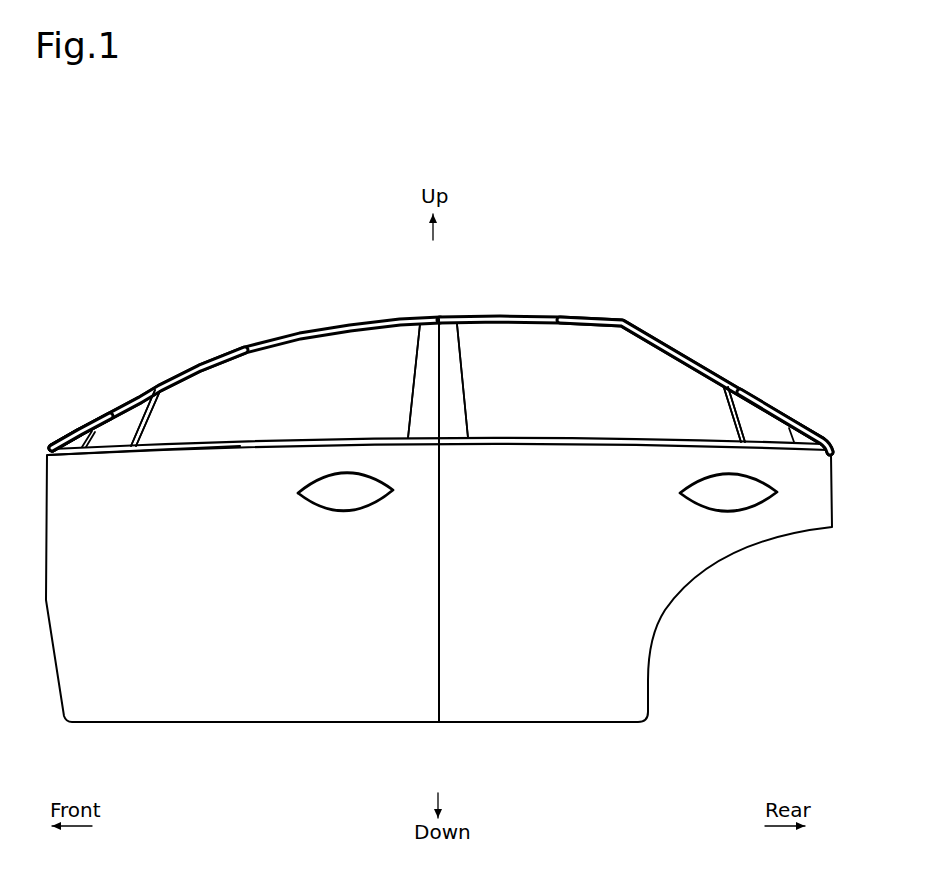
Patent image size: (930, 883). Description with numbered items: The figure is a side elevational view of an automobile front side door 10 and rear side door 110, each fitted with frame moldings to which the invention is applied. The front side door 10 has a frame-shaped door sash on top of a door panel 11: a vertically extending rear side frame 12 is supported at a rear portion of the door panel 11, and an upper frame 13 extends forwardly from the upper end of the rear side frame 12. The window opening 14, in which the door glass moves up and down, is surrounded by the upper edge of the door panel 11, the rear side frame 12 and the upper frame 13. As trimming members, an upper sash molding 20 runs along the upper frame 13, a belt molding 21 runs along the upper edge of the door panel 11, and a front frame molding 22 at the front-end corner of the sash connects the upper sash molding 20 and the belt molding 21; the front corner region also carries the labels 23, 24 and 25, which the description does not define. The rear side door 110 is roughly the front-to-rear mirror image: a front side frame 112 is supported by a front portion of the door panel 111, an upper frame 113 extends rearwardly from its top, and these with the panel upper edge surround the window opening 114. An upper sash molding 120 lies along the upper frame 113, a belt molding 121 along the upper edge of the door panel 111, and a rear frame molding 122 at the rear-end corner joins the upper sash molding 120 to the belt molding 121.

The front side door 10 is at (426, 508).
The door panel 11 is at (207, 705).
The rear side frame 12 is at (406, 382).
The upper frame 13 is at (336, 316).
The window opening 14 is at (300, 368).
The upper sash molding 20 is at (244, 340).
The belt molding 21 is at (240, 438).
The front frame molding 22 is at (99, 404).
The front door partition sash 23 is at (135, 390).
The front door lower belt portion 24 is at (105, 456).
The front door sash front end 25 is at (60, 440).
The rear side door 110 is at (635, 502).
The door panel 111 is at (575, 700).
The front side frame 112 is at (469, 380).
The upper frame 113 is at (509, 311).
The window opening 114 is at (550, 348).
The upper sash molding 120 is at (586, 318).
The belt molding 121 is at (622, 436).
The rear frame molding 122 is at (759, 388).